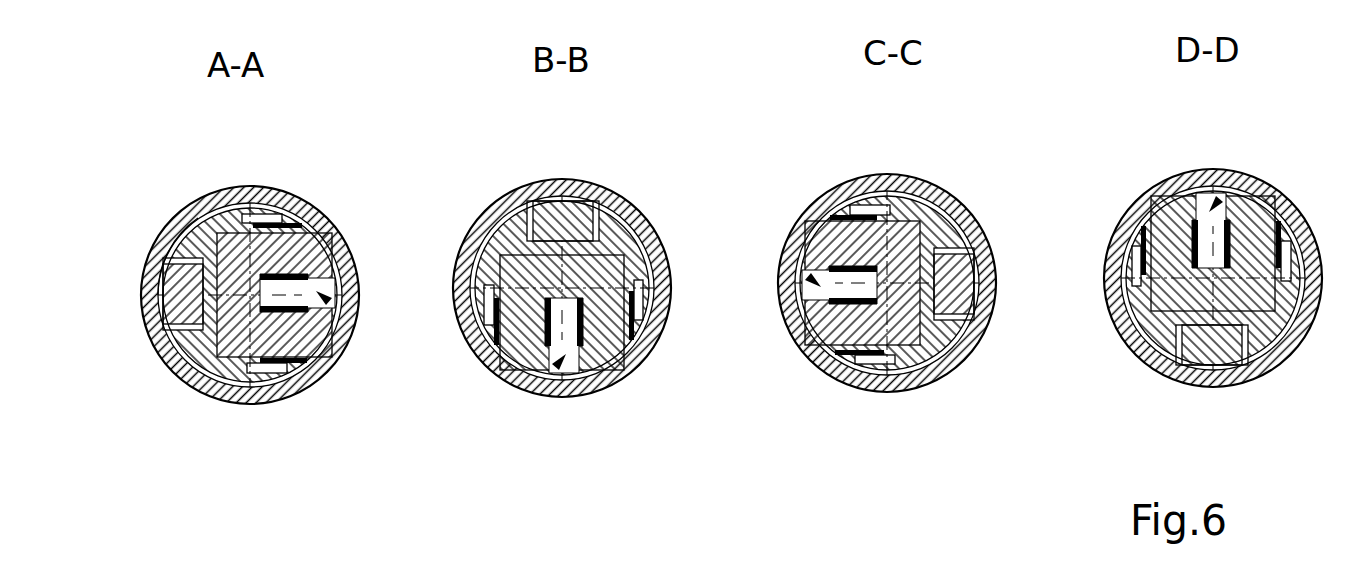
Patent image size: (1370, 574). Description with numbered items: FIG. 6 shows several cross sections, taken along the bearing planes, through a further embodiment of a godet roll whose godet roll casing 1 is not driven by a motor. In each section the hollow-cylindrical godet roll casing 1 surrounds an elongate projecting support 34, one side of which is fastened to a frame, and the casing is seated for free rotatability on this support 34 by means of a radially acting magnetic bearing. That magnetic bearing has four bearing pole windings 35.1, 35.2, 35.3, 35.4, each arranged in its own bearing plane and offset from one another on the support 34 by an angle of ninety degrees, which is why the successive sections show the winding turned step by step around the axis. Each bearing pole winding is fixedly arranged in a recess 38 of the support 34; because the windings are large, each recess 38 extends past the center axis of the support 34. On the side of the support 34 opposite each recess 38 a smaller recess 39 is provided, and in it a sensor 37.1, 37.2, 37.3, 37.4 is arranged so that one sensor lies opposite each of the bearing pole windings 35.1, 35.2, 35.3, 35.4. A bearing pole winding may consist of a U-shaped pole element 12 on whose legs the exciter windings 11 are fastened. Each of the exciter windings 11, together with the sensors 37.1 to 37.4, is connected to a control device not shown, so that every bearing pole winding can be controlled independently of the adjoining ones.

The godet roll casing 1 is at (193, 387).
The exciter windings 11 is at (293, 212).
The U-shaped pole element 12 is at (338, 232).
The support 34 is at (172, 232).
The recesses 38 is at (203, 207).
The smaller recess 39 is at (163, 348).
The sensor 37.1 is at (170, 283).
The sensor 37.2 is at (585, 202).
The sensor 37.3 is at (957, 300).
The sensor 37.4 is at (1268, 372).
The bearing pole winding 35.1 is at (336, 323).
The bearing pole winding 35.2 is at (603, 372).
The bearing pole winding 35.3 is at (793, 256).
The bearing pole winding 35.4 is at (1185, 183).